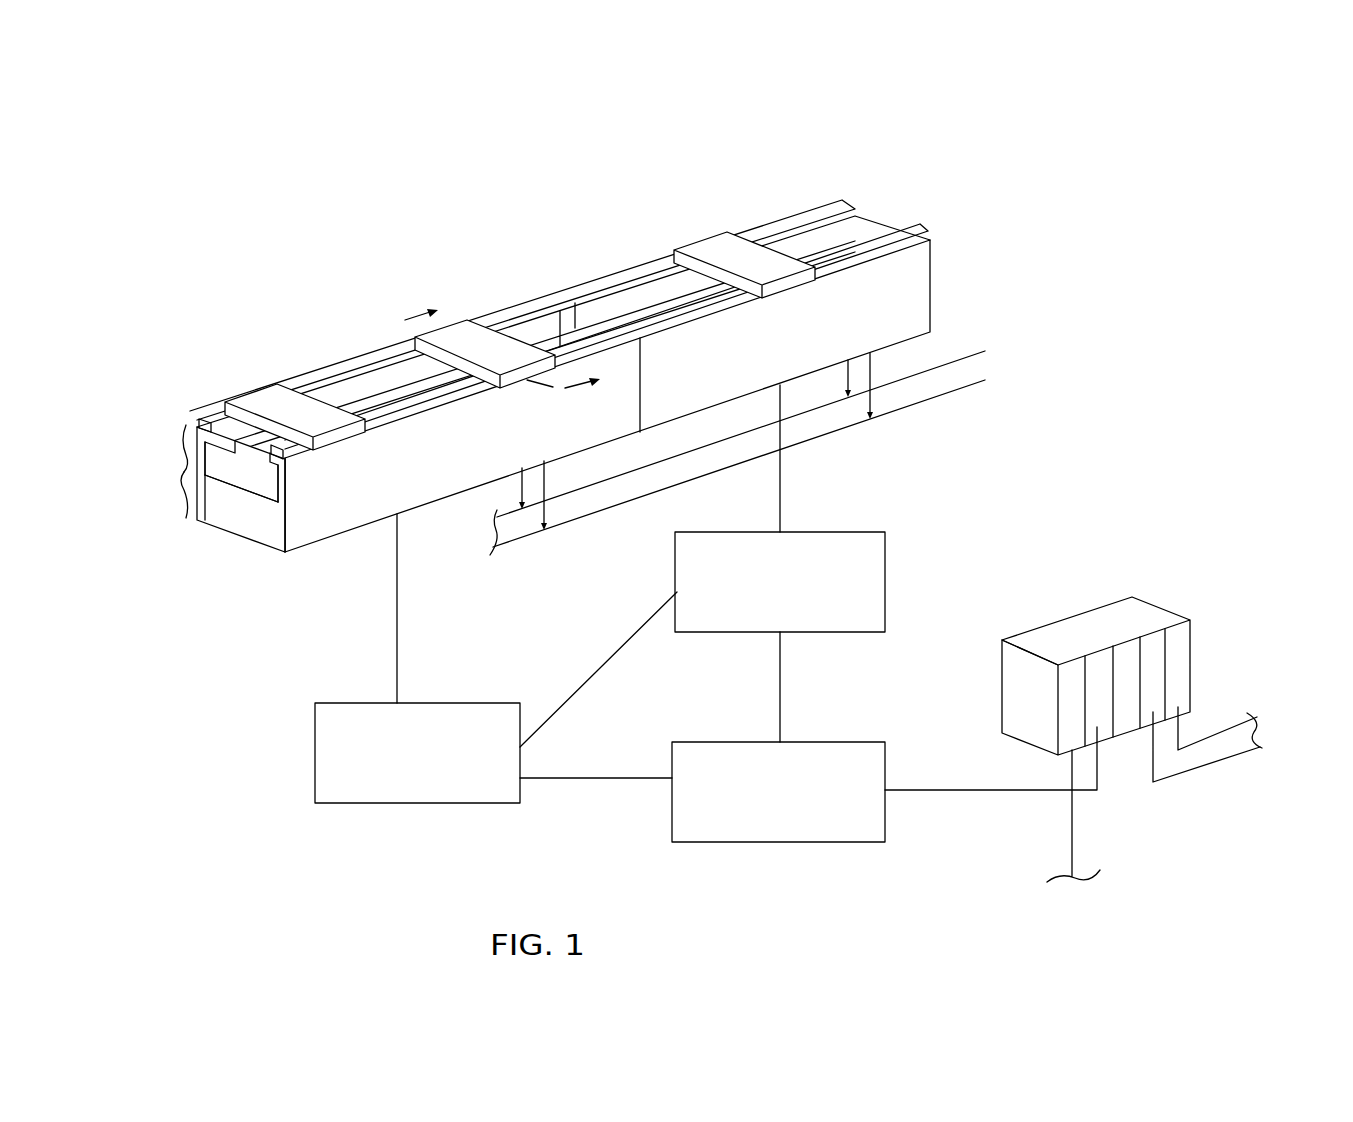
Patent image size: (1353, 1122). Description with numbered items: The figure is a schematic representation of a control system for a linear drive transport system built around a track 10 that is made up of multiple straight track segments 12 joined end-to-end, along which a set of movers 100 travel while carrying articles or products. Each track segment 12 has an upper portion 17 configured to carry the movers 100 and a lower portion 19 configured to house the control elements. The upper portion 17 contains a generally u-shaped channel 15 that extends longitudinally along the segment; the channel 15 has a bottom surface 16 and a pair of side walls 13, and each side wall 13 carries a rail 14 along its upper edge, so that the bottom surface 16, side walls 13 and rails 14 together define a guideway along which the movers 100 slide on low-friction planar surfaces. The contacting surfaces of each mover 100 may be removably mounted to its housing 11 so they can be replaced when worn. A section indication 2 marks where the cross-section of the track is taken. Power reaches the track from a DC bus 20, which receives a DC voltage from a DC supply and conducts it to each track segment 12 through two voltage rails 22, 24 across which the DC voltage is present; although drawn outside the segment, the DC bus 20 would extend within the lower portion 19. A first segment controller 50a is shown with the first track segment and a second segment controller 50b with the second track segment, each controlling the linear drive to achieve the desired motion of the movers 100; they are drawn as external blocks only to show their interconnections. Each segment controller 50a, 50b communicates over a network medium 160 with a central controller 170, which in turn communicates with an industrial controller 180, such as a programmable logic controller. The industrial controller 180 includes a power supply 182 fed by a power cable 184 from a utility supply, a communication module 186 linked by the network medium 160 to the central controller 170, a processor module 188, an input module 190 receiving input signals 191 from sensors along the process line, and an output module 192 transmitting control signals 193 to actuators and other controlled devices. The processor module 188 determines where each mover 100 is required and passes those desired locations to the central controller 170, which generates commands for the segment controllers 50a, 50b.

The track 10 is at (888, 155).
The housing 11 is at (492, 455).
The track segment 12 is at (584, 290).
The side wall 13 is at (578, 330).
The rail 14 is at (778, 228).
The channel 15 is at (835, 242).
The bottom surface 16 is at (258, 478).
The upper portion 17 is at (185, 440).
The lower portion 19 is at (180, 490).
The section line 2 is at (513, 346).
The mover 100 is at (705, 242).
The DC bus 20 is at (800, 410).
The voltage rail 22 is at (972, 345).
The voltage rail 24 is at (950, 392).
The first segment controller 50a is at (425, 703).
The second segment controller 50b is at (845, 532).
The network medium 160 is at (590, 677).
The central controller 170 is at (710, 843).
The industrial controller 180 is at (1113, 628).
The power supply 182 is at (1057, 663).
The power cable 184 is at (1075, 845).
The communication module 186 is at (1095, 663).
The processor module 188 is at (1128, 647).
The input module 190 is at (1155, 647).
The input signals 191 is at (1200, 760).
The output module 192 is at (1178, 633).
The control signals 193 is at (1220, 723).